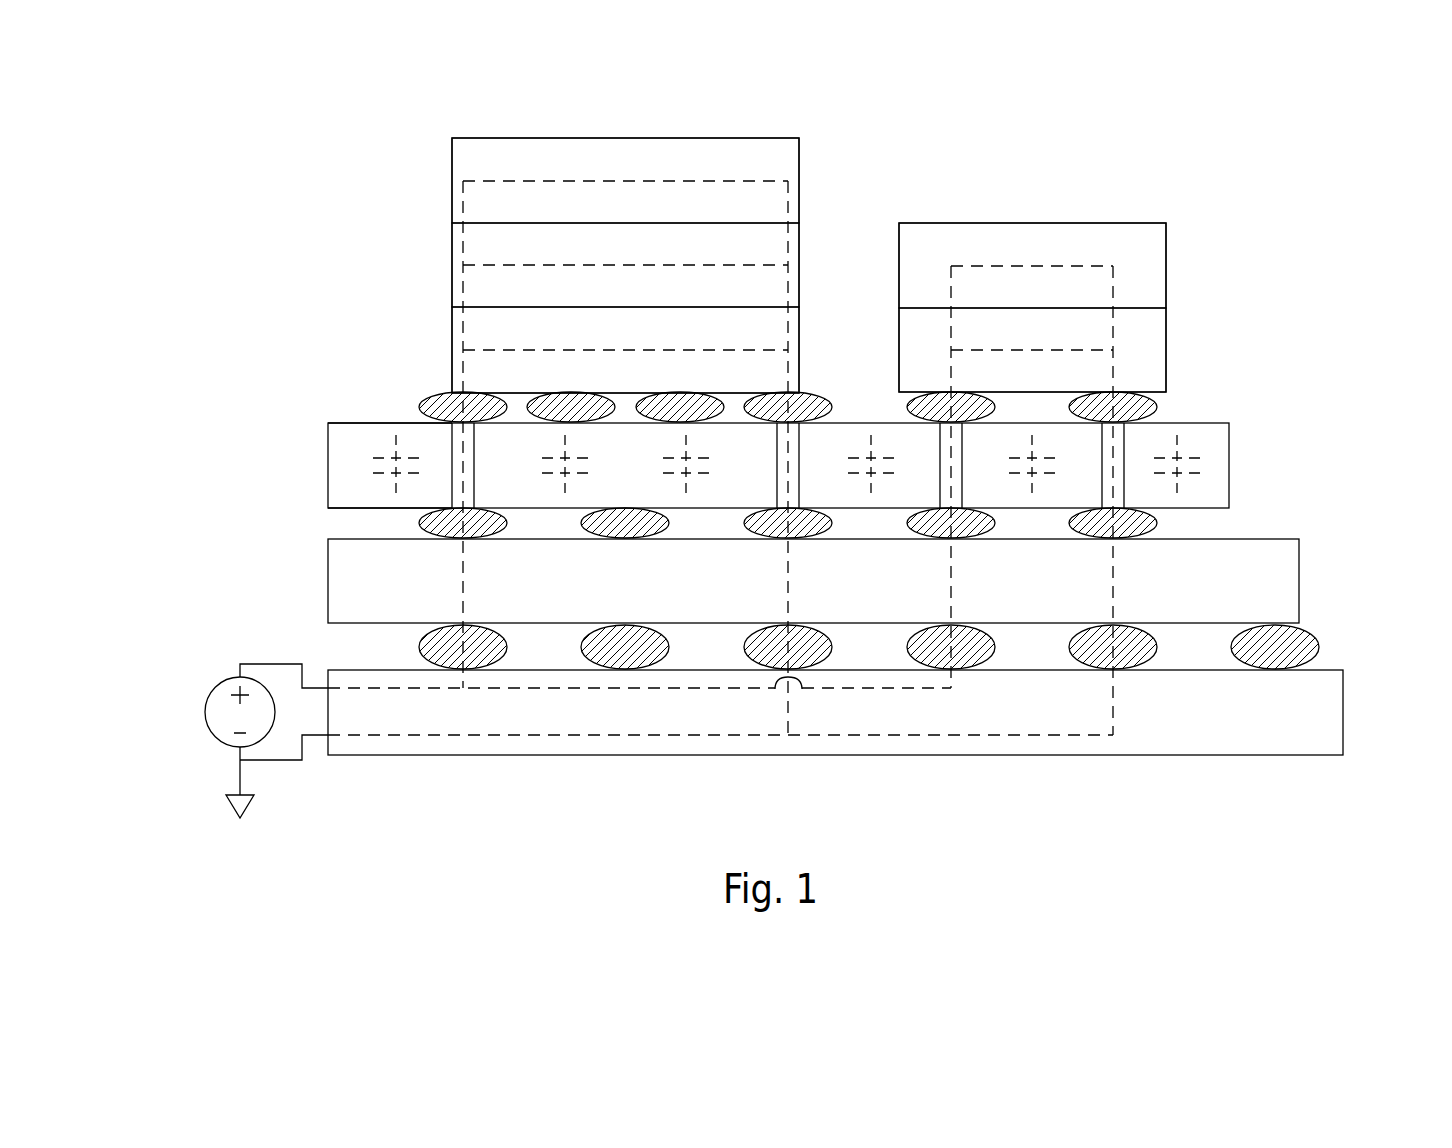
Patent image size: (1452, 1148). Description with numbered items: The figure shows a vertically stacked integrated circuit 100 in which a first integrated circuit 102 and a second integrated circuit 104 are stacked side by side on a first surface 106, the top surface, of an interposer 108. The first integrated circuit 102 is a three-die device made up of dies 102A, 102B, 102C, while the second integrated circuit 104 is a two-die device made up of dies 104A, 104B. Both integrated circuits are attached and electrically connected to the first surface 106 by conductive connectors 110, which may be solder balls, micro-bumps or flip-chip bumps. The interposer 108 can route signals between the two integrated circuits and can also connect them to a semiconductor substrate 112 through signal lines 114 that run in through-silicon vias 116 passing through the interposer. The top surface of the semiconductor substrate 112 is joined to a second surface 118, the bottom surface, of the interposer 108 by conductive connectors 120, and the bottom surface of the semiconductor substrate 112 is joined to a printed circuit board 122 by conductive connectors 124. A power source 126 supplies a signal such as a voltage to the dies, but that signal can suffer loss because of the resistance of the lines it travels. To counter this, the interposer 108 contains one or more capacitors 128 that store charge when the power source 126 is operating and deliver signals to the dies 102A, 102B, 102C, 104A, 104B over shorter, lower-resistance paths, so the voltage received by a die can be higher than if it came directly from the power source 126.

The vertically stacked integrated circuit 100 is at (1224, 154).
The first integrated circuit 102 is at (452, 159).
The die 102A is at (460, 205).
The die 102B is at (460, 250).
The die 102C is at (460, 333).
The second integrated circuit 104 is at (1167, 237).
The die 104A is at (1155, 272).
The die 104B is at (1155, 349).
The first surface 106 is at (343, 423).
The interposer 108 is at (1230, 465).
The conductive connectors 110 is at (1157, 410).
The semiconductor substrate 112 is at (1300, 582).
The signal lines 114 is at (790, 207).
The through-silicon vias 116 is at (434, 447).
The second surface 118 is at (347, 510).
The conductive connectors 120 is at (1157, 525).
The printed circuit board 122 is at (1344, 715).
The conductive connectors 124 is at (1318, 648).
The power source 126 is at (205, 708).
The capacitors 128 is at (383, 458).